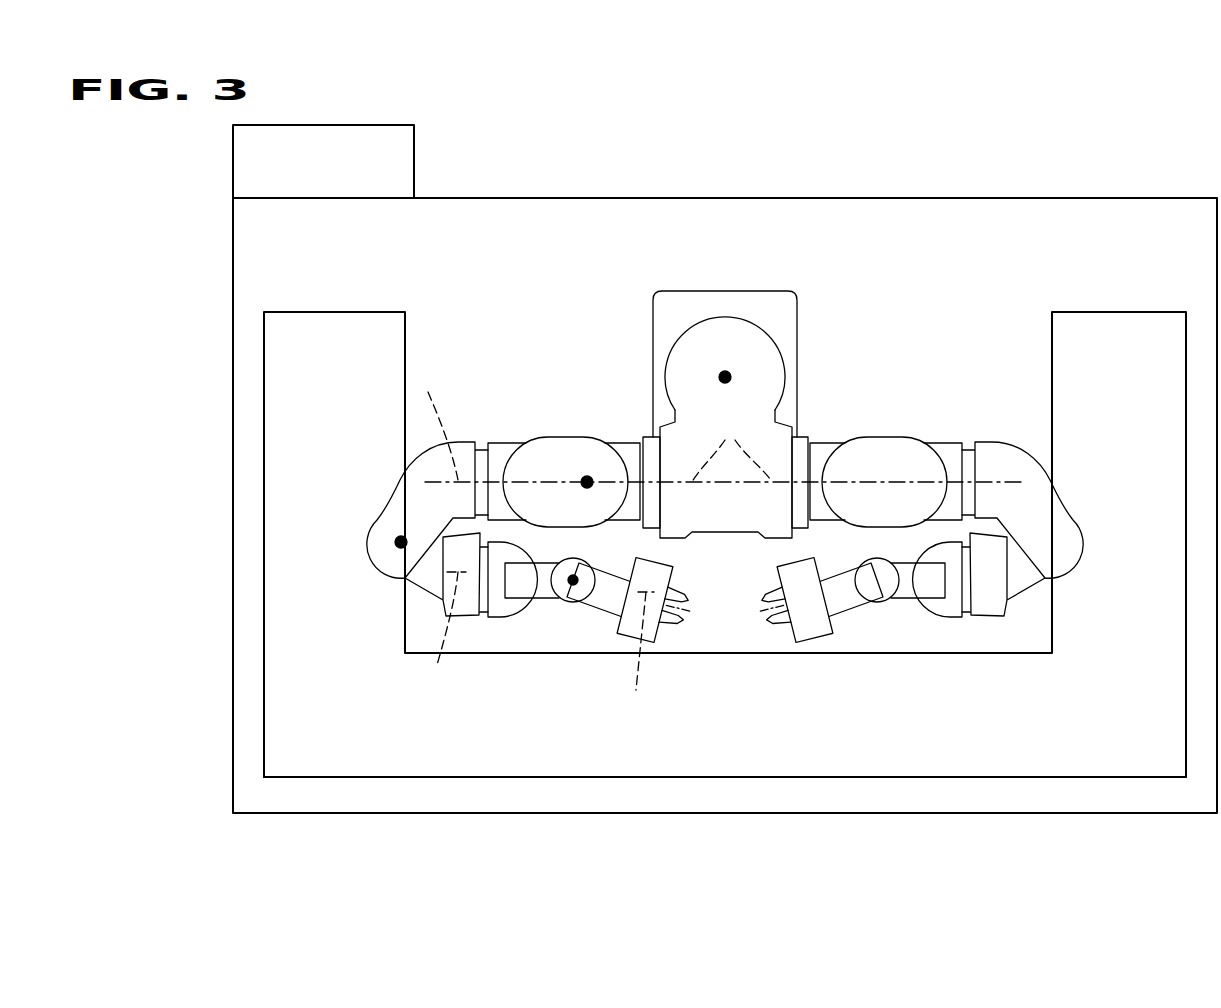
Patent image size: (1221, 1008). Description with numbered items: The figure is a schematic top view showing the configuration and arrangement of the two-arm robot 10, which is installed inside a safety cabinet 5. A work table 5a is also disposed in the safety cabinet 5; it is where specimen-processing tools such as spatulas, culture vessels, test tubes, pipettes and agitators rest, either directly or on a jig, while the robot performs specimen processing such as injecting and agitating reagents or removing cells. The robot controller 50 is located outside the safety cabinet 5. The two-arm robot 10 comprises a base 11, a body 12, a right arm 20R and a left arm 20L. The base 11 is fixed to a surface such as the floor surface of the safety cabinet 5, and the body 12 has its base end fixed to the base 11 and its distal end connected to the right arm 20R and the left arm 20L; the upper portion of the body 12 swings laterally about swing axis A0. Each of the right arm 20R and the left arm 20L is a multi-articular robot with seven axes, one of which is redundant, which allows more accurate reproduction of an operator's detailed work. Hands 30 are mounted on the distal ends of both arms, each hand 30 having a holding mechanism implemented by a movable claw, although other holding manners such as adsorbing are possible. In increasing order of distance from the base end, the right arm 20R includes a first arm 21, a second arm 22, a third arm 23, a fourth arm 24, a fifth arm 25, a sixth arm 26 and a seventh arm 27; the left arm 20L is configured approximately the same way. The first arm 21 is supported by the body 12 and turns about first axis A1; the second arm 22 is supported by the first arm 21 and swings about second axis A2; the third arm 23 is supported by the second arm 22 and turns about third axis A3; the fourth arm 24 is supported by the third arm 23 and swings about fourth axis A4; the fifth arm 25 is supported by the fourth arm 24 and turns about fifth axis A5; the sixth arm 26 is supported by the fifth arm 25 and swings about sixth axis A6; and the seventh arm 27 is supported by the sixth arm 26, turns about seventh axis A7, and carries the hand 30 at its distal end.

The safety cabinet 5 is at (968, 198).
The work table 5a is at (953, 728).
The robot controller 50 is at (360, 150).
The two-arm robot 10 is at (720, 377).
The base 11 is at (703, 290).
The body 12 is at (682, 366).
The right arm 20R is at (515, 513).
The left arm 20L is at (920, 425).
The first arm 21 is at (637, 445).
The second arm 22 is at (542, 450).
The third arm 23 is at (432, 462).
The fourth arm 24 is at (427, 580).
The fifth arm 25 is at (502, 617).
The sixth arm 26 is at (573, 603).
The seventh arm 27 is at (595, 610).
The hand 30 is at (653, 635).
The swing axis A0 is at (733, 372).
The first axis A1 is at (731, 447).
The second axis A2 is at (581, 476).
The third axis A3 is at (438, 421).
The fourth axis A4 is at (398, 540).
The fifth axis A5 is at (438, 639).
The sixth axis A6 is at (568, 590).
The seventh axis A7 is at (638, 660).